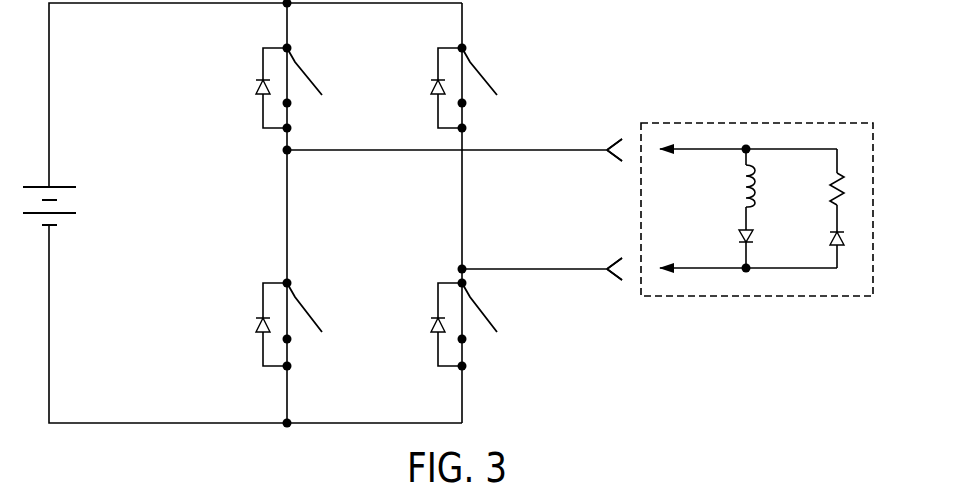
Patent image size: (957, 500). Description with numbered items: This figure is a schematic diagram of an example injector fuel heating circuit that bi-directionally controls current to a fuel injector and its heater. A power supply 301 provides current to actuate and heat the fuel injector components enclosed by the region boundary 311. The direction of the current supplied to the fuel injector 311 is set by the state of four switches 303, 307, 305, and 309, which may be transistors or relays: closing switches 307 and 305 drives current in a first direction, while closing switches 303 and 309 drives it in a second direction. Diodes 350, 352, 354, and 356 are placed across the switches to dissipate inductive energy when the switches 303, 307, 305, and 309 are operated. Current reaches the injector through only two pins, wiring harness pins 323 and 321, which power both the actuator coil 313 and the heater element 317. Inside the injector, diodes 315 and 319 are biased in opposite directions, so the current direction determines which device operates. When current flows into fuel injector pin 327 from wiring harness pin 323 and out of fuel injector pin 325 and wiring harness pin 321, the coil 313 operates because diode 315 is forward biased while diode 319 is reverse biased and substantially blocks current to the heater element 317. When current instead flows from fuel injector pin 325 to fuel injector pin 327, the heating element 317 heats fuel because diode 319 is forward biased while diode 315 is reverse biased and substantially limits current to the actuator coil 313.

The power supply 301 is at (63, 213).
The switch 303 is at (305, 73).
The switch 305 is at (305, 311).
The switch 307 is at (480, 73).
The switch 309 is at (480, 311).
The fuel injector 311 is at (858, 296).
The actuator coil 313 is at (740, 194).
The diode 315 is at (740, 236).
The heater element 317 is at (830, 194).
The diode 319 is at (832, 238).
The wiring harness pin 321 is at (616, 279).
The wiring harness pin 323 is at (616, 160).
The fuel injector pin 325 is at (670, 271).
The fuel injector pin 327 is at (670, 147).
The diode 350 is at (255, 90).
The diode 352 is at (430, 90).
The diode 354 is at (255, 328).
The diode 356 is at (430, 328).